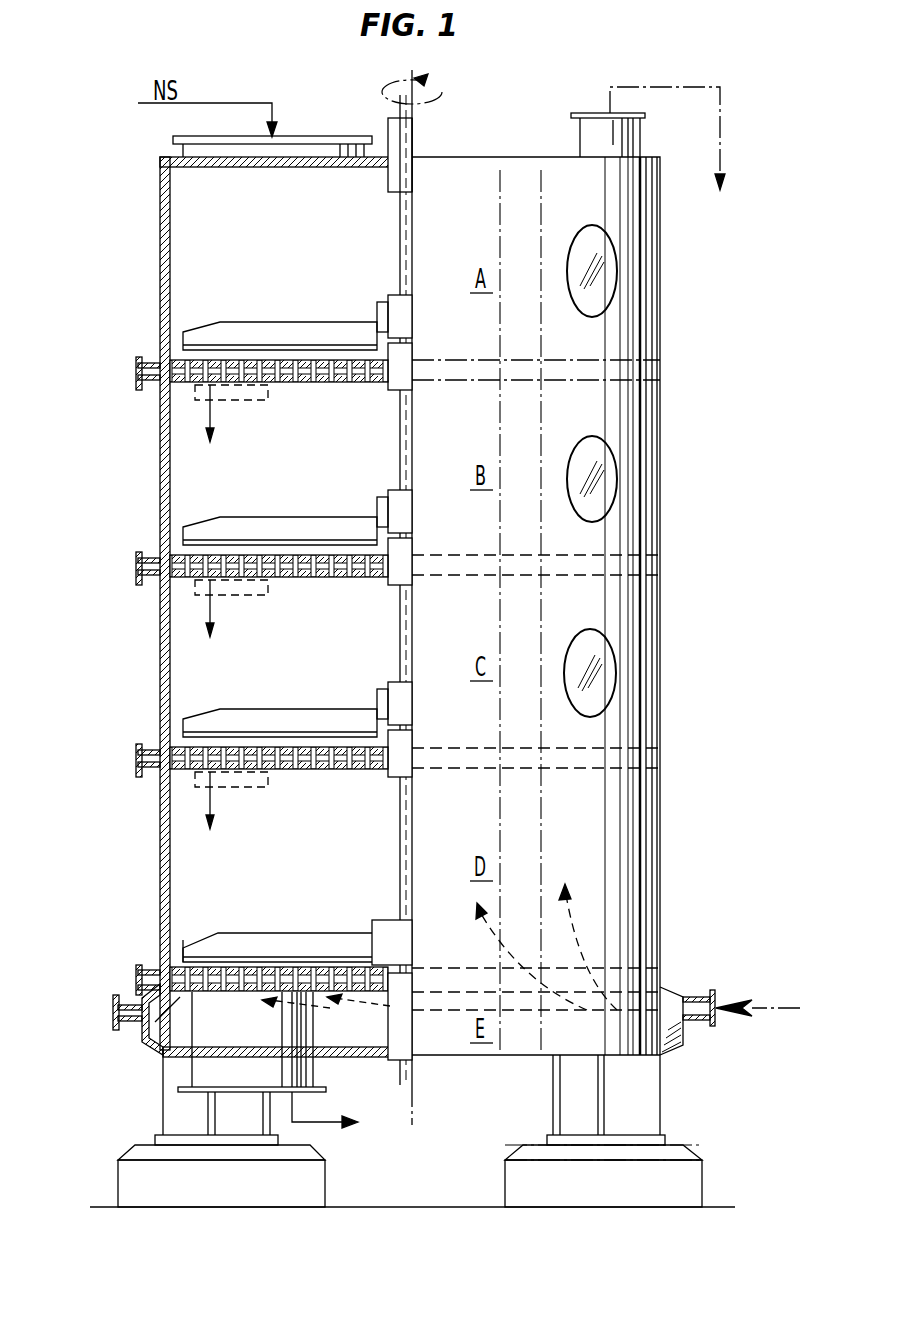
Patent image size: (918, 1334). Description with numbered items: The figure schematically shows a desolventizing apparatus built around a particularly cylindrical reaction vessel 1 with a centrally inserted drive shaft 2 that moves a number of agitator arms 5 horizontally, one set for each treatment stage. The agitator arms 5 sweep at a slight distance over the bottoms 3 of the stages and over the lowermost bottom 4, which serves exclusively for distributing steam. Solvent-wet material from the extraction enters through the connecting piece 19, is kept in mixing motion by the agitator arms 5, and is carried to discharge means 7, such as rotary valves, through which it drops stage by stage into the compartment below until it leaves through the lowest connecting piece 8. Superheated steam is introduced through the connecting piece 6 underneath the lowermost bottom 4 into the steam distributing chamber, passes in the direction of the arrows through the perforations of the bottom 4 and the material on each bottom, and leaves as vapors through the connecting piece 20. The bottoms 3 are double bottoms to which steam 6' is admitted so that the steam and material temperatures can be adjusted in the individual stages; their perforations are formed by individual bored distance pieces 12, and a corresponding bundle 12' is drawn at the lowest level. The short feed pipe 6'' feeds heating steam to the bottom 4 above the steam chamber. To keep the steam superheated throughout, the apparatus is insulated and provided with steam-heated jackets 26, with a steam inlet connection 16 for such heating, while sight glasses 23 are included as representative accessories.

The reaction vessel 1 is at (637, 341).
The drive shaft 2 is at (400, 256).
The bottoms 3 is at (305, 384).
The lowermost bottom 4 is at (265, 967).
The agitator arms 5 is at (256, 333).
The connecting piece 6 is at (730, 1023).
The steam admission 6' is at (139, 586).
The short feed pipe 6'' is at (138, 956).
The discharge means 7 is at (237, 400).
The lowest connecting piece 8 is at (200, 1068).
The bored distance pieces 12 is at (279, 600).
The bottom heat exchanger bundle 12' is at (283, 1027).
The steam inlet connection 16 is at (132, 1022).
The connecting piece 19 is at (317, 148).
The connecting piece 20 is at (628, 133).
The sight glasses 23 is at (605, 490).
The steam-heated jacket 26 is at (194, 968).